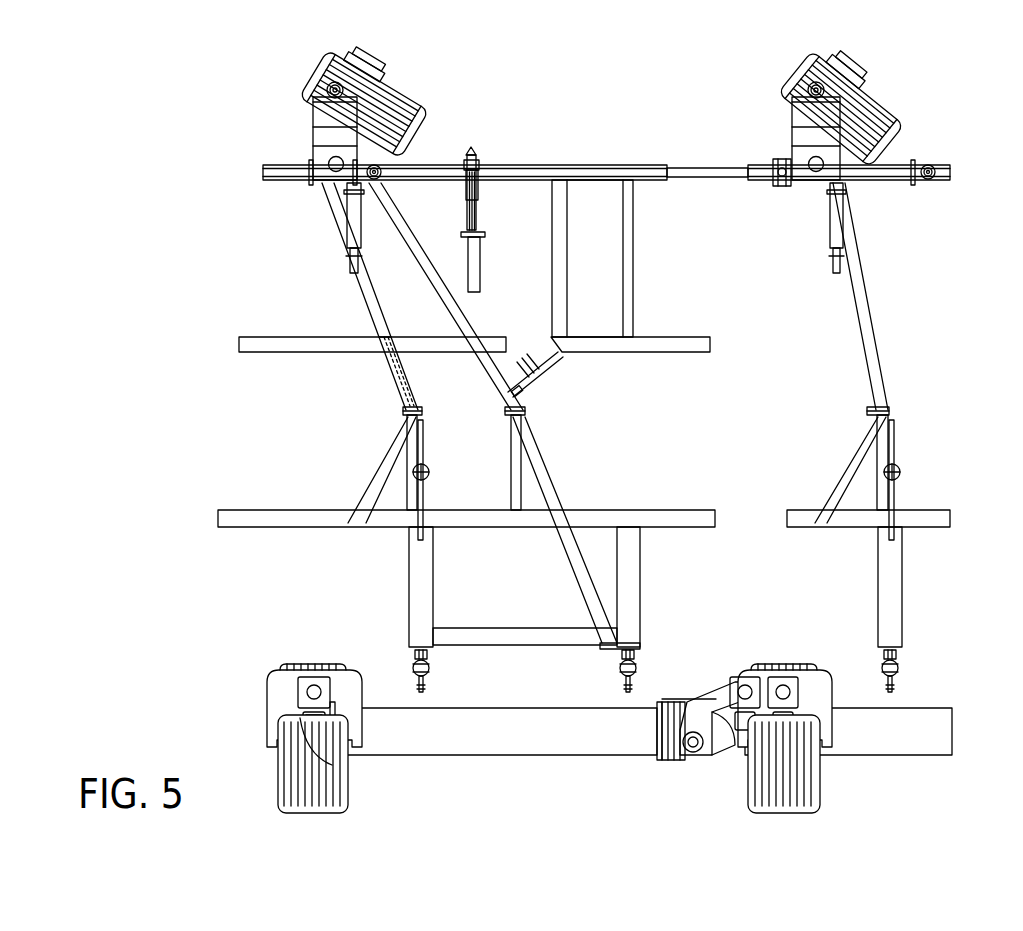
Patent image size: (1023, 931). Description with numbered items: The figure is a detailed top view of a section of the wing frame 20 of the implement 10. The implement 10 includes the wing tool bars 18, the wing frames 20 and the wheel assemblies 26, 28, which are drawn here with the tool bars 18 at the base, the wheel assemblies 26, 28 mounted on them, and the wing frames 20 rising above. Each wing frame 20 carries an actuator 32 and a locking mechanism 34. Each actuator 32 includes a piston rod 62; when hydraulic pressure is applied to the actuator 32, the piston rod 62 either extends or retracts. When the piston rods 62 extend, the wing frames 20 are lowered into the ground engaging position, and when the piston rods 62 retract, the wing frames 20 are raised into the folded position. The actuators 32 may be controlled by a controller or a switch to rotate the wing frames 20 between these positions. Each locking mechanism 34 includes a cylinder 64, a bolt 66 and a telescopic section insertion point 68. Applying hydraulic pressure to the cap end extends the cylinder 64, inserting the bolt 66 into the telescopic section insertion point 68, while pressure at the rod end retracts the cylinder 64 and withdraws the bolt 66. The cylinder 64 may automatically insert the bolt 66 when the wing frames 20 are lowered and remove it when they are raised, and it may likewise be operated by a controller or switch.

The implement 10 is at (68, 161).
The wing tool bar 18 is at (487, 738).
The wing frame 20 is at (377, 352).
The wheel assembly 26 is at (278, 782).
The wheel assembly 28 is at (311, 70).
The actuator 32 is at (392, 578).
The locking mechanism 34 is at (424, 191).
The piston rod 62 is at (427, 497).
The cylinder 64 is at (467, 252).
The bolt 66 is at (468, 188).
The telescopic section insertion point 68 is at (482, 168).